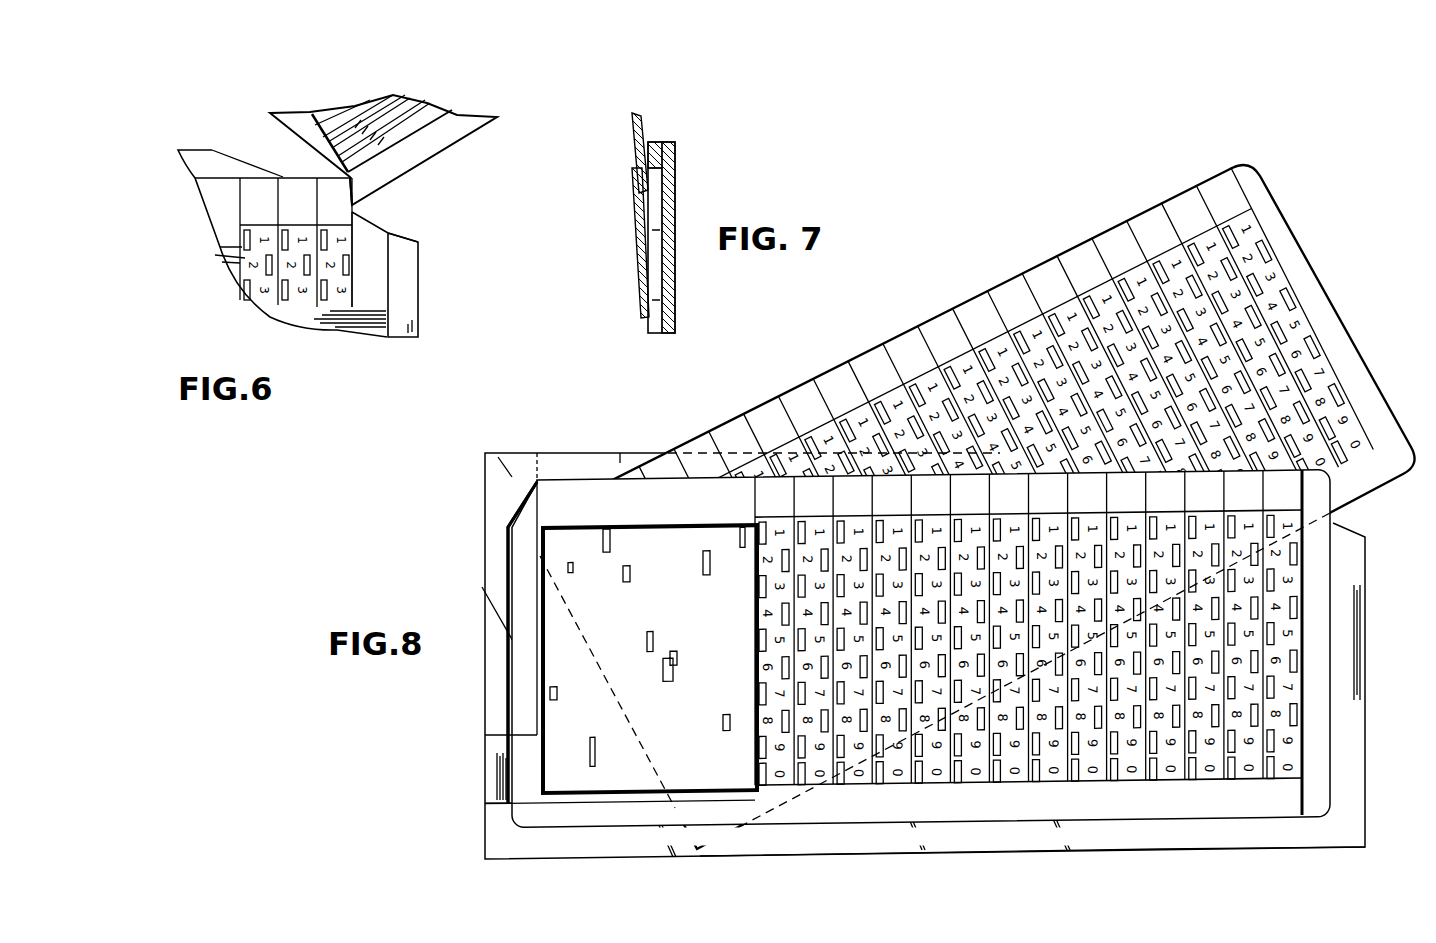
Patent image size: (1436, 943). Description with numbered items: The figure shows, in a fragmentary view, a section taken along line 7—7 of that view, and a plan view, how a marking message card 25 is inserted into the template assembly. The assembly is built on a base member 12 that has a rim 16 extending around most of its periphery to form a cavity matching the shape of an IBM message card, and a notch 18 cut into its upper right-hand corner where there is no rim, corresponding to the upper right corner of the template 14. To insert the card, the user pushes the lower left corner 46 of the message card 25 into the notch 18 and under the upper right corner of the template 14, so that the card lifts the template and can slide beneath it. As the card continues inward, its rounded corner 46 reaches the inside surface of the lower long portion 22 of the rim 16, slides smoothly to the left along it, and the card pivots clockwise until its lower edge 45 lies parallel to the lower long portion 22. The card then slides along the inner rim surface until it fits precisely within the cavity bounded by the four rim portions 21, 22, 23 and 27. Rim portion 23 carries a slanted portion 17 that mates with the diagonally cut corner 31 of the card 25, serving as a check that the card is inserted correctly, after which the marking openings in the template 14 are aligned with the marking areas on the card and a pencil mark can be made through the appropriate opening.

In FIG. 6, the section line 7— 7 is at (335, 103).
In FIG. 6, the base member 12 is at (418, 270).
In FIG. 7, the base member 12 is at (675, 190).
In FIG. 6, the template 14 is at (283, 177).
In FIG. 7, the template 14 is at (636, 237).
In FIG. 8, the rim 16 is at (1238, 842).
In FIG. 8, the slanted portion 17 is at (508, 527).
In FIG. 6, the notch 18 is at (386, 227).
In FIG. 8, the rim portion 21 is at (1362, 677).
In FIG. 8, the lower long portion of the rim 22 is at (870, 845).
In FIG. 8, the rim portion 23 is at (488, 773).
In FIG. 6, the message card 25 is at (433, 157).
In FIG. 7, the message card 25 is at (635, 135).
In FIG. 8, the rim portion 27 is at (569, 463).
In FIG. 8, the diagonally cut corner 31 is at (540, 450).
In FIG. 8, the lower edge of the message card 45 is at (1373, 487).
In FIG. 6, the lower left corner of the message card 46 is at (357, 208).
In FIG. 8, the lower left corner of the message card 46 is at (688, 850).